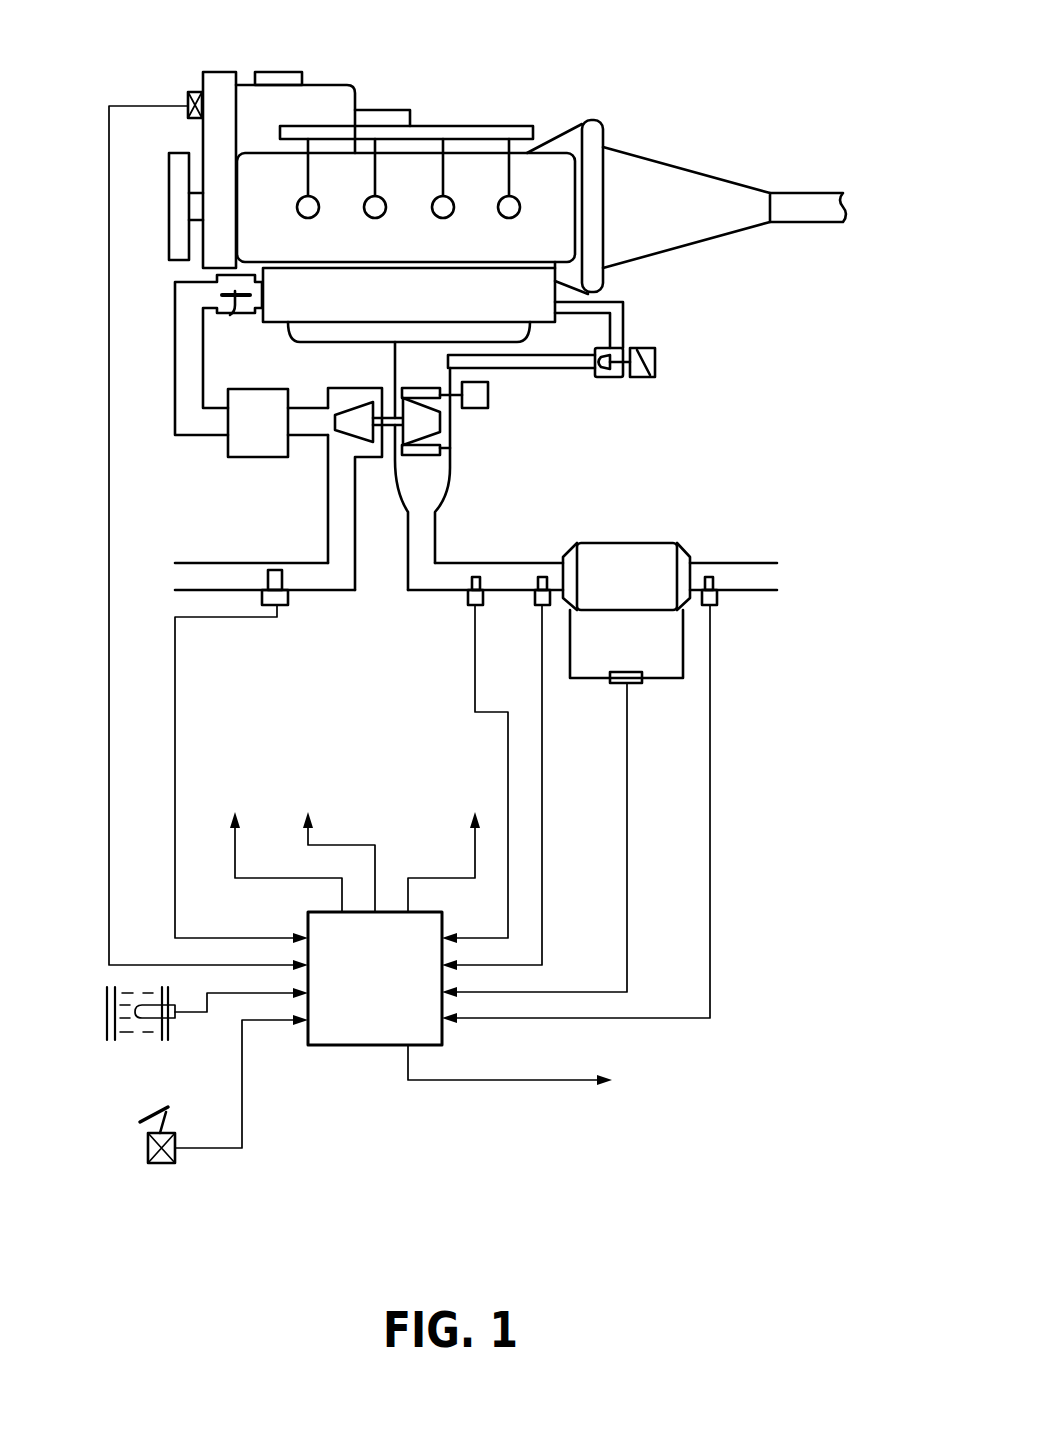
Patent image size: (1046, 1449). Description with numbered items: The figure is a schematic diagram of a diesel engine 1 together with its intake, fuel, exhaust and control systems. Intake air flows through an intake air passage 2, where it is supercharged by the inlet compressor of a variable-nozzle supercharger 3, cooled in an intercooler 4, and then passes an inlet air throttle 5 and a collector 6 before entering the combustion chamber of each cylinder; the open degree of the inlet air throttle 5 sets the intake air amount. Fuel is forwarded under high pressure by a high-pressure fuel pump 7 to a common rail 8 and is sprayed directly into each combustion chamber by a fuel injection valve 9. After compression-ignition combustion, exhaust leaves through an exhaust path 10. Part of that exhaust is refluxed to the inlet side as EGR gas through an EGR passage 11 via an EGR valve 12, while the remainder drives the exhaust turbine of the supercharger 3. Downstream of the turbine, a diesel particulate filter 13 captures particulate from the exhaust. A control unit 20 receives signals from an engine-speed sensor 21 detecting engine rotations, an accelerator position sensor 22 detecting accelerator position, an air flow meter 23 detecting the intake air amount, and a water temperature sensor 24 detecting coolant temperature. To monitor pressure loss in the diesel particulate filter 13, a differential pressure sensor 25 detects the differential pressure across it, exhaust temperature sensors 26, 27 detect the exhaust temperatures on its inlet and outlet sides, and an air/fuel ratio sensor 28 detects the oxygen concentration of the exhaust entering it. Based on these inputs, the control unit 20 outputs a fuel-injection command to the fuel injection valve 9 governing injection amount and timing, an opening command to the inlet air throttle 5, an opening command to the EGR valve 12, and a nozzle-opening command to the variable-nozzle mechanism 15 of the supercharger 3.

The engine 1 is at (543, 167).
The intake air passage 2 is at (183, 563).
The variable-nozzle supercharger 3 is at (365, 445).
The intercooler 4 is at (258, 457).
The inlet air throttle 5 is at (232, 315).
The collector 6 is at (282, 308).
The high-pressure fuel pump 7 is at (323, 84).
The common rail 8 is at (448, 124).
The fuel injection valve 9 is at (317, 213).
The exhaust path 10 is at (428, 490).
The EGR passage 11 is at (570, 370).
The EGR valve 12 is at (653, 348).
The diesel particulate filter 13 is at (617, 543).
The variable-nozzle mechanism 15 is at (472, 408).
The control unit 20 is at (340, 1045).
The engine-speed sensor 21 is at (190, 96).
The accelerator position sensor 22 is at (162, 1163).
The air flow meter 23 is at (288, 607).
The water temperature sensor 24 is at (173, 1020).
The differential pressure sensor 25 is at (642, 683).
The exhaust temperature sensor 26 is at (535, 607).
The exhaust temperature sensor 27 is at (718, 603).
The air/fuel ratio sensor 28 is at (470, 605).